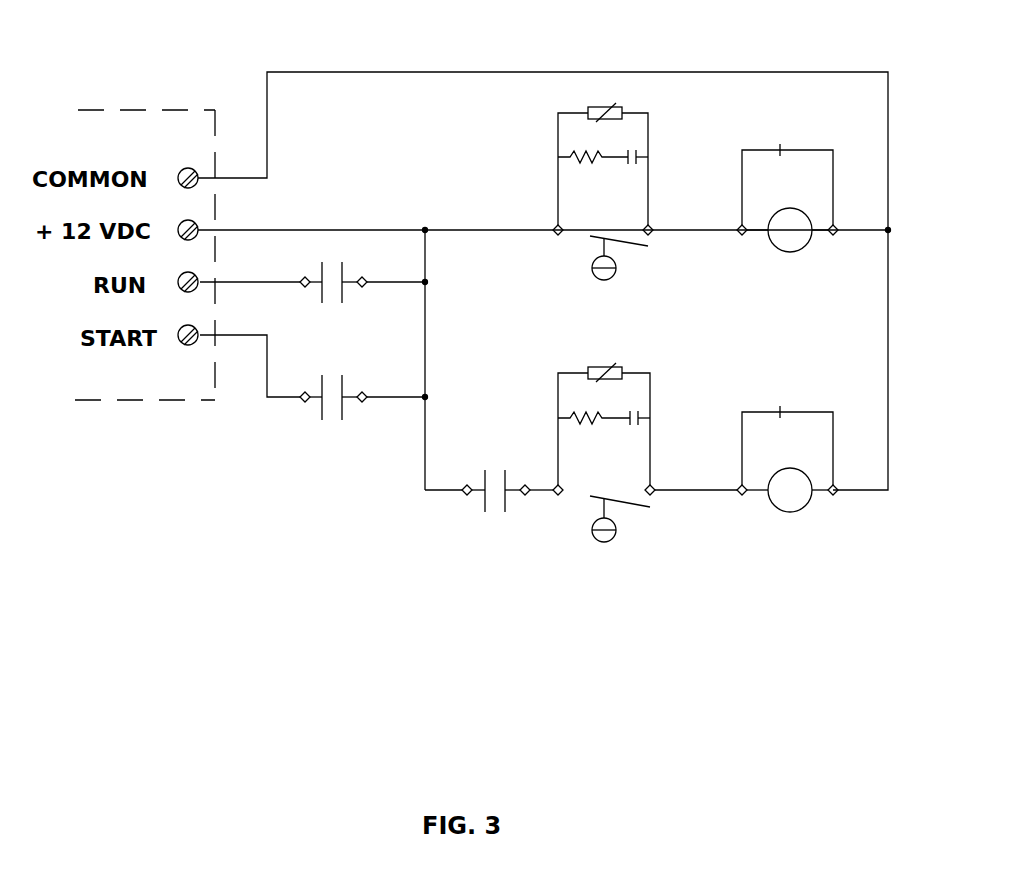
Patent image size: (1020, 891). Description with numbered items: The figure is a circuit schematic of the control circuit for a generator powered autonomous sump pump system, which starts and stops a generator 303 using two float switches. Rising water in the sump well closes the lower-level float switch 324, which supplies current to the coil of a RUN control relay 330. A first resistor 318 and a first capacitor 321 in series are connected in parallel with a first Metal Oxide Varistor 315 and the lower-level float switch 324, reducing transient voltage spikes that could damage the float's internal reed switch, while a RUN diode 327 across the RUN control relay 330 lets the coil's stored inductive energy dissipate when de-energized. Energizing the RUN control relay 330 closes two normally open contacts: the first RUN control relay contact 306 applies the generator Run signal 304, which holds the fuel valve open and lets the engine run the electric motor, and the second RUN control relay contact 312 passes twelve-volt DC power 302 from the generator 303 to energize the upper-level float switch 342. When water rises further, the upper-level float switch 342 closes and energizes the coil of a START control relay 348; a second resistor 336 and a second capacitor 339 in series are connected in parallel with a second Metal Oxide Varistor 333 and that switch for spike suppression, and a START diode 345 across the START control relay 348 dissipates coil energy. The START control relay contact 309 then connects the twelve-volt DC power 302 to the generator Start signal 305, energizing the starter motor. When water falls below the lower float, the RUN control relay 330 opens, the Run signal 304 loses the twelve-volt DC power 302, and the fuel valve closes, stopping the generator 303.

The +12 VDC power 302 is at (190, 232).
The generator 303 is at (130, 98).
The Run signal 304 is at (190, 278).
The Start signal 305 is at (195, 346).
The first RUN control relay contact 306 is at (343, 298).
The START control relay contact 309 is at (343, 413).
The second RUN control relay contact 312 is at (485, 508).
The first Metal Oxide Varistor 315 is at (588, 108).
The first resistor 318 is at (577, 160).
The first capacitor 321 is at (648, 160).
The lower-level float switch 324 is at (617, 272).
The RUN diode 327 is at (792, 148).
The RUN control relay 330 is at (798, 248).
The second Metal Oxide Varistor 333 is at (595, 365).
The second resistor 336 is at (560, 418).
The second capacitor 339 is at (650, 418).
The upper-level float switch 342 is at (615, 537).
The START diode 345 is at (792, 410).
The START control relay 348 is at (798, 510).